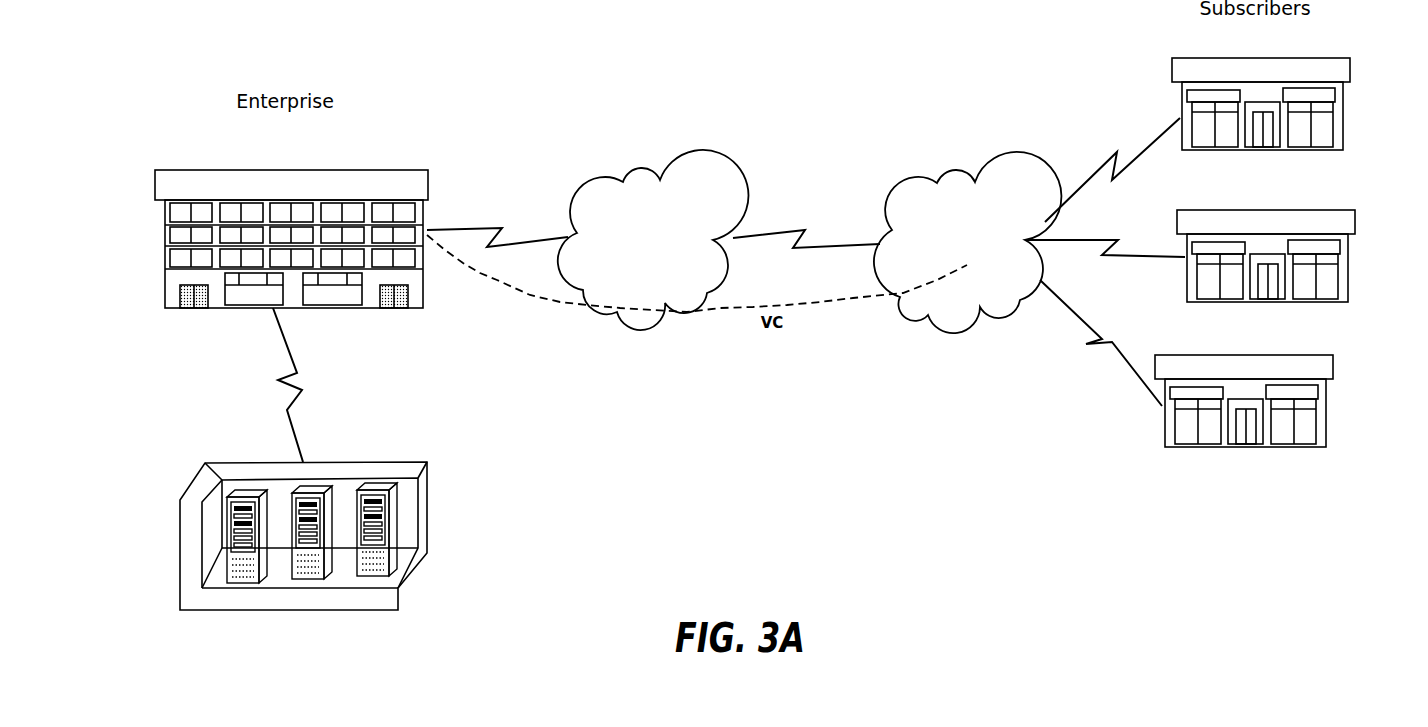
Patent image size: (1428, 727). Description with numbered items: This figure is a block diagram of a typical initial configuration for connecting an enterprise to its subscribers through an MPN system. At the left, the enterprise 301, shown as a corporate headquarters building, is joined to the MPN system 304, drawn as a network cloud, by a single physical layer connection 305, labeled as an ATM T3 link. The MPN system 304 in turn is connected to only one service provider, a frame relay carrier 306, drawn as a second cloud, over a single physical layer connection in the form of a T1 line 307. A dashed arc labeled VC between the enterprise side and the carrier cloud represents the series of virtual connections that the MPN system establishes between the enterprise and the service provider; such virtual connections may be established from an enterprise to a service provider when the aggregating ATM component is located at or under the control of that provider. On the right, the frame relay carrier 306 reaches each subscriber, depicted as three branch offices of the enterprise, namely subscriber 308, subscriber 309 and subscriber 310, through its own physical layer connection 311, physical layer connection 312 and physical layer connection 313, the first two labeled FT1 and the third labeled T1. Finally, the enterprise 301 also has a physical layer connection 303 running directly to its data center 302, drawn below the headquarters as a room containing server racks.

The enterprise 301 is at (273, 252).
The data center 302 is at (296, 549).
The physical layer connection 303 is at (273, 385).
The MPN system 304 is at (653, 240).
The physical layer connection 305 is at (497, 238).
The frame relay carrier 306 is at (967, 242).
The T1 line 307 is at (806, 243).
The subscriber 308 is at (1279, 116).
The subscriber 309 is at (1284, 268).
The subscriber 310 is at (1262, 413).
The physical layer connection 311 is at (1112, 170).
The physical layer connection 312 is at (1106, 251).
The physical layer connection 313 is at (1101, 343).